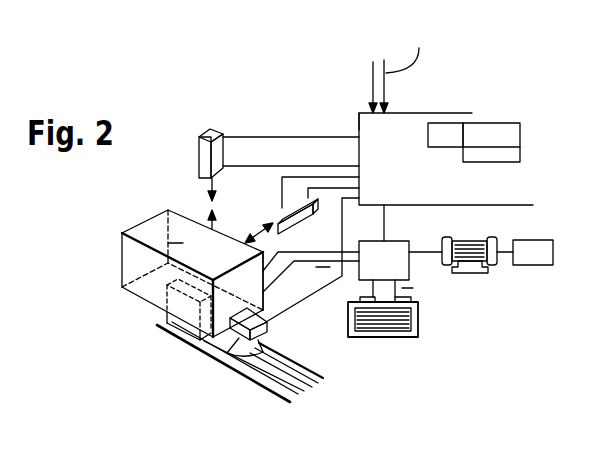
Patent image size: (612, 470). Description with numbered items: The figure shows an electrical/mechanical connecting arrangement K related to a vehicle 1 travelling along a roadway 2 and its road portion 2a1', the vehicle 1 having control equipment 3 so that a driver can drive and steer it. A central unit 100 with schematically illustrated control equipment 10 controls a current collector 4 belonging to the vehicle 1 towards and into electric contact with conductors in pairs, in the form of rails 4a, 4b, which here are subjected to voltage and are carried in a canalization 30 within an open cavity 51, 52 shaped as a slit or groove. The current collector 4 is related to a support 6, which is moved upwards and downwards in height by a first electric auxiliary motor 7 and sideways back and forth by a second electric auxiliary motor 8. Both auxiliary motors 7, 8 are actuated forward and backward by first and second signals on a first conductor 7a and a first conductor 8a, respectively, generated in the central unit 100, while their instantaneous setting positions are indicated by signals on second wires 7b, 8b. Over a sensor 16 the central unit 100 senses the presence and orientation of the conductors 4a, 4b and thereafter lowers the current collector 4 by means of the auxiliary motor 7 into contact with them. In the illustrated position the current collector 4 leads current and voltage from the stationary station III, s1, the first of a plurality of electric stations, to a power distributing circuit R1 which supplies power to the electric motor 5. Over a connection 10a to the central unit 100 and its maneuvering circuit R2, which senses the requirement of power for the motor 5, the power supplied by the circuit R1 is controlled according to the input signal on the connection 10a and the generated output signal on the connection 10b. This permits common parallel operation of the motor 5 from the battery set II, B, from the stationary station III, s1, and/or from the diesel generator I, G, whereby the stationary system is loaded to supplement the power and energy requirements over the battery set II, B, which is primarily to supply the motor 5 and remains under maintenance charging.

The vehicle 1 is at (223, 118).
The roadway 2 is at (160, 332).
The control equipment 3 is at (453, 138).
The current collector 4 is at (168, 318).
The rail 4a is at (218, 356).
The rail 4b is at (295, 370).
The electric motor 5 is at (466, 240).
The support 6 is at (175, 232).
The first electric auxiliary motor 7 is at (200, 150).
The first conductor 7a is at (302, 165).
The second wire 7b is at (333, 137).
The second electric auxiliary motor 8 is at (275, 223).
The first conductor 8a is at (281, 190).
The second wire 8b is at (341, 188).
The control equipment 10 is at (515, 155).
The connection 10a is at (346, 107).
The connection 10b is at (385, 230).
The sensor 16 is at (270, 325).
The canalization 30 is at (251, 376).
The open cavity 51 is at (285, 397).
The open cavity 52 is at (286, 365).
The central unit 100 is at (430, 113).
The power distributing circuit R1 is at (412, 272).
The maneuvering circuit R2 is at (503, 123).
The diesel generator G is at (371, 77).
The diesel generator energy source I is at (404, 49).
The battery set power source II is at (383, 354).
The stationary station power source III is at (167, 367).
The electrical/mechanical connecting arrangement K is at (191, 264).
The battery set B is at (419, 322).
The electric station s1 is at (274, 368).
The road portion 2a1' is at (348, 407).